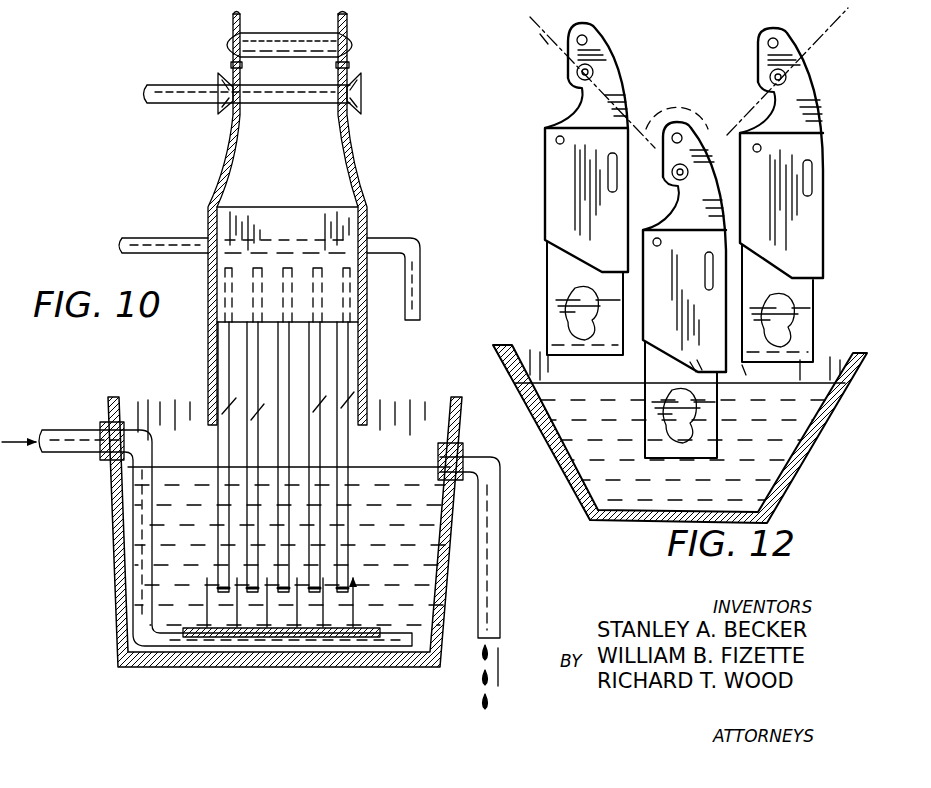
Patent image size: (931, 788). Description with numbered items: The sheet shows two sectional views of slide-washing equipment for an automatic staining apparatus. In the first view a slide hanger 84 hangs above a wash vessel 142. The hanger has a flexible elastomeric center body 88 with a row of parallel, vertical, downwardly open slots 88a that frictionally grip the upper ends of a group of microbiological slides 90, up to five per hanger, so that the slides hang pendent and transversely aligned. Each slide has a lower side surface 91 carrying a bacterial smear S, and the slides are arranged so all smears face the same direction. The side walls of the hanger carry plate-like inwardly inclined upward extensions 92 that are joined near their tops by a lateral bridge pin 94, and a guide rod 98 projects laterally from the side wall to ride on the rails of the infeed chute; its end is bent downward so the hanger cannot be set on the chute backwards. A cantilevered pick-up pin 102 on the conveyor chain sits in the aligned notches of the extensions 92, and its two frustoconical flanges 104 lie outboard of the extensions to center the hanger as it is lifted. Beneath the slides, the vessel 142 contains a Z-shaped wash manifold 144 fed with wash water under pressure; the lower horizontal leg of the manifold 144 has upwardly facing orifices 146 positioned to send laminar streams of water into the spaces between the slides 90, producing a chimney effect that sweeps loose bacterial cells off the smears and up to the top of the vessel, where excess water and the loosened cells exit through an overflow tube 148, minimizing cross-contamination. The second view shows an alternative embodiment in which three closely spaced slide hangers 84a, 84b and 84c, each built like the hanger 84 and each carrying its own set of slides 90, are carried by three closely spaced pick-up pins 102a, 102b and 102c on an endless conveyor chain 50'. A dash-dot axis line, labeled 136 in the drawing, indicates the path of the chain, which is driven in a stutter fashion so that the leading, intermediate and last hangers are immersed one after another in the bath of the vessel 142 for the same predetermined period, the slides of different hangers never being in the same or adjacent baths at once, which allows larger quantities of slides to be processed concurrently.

In FIG. 10, the slide hanger 84 is at (206, 207).
In FIG. 12, the slide hanger 84a is at (856, 134).
In FIG. 12, the slide hanger 84b is at (655, 267).
In FIG. 12, the slide hanger 84c is at (570, 170).
In FIG. 10, the center body 88 is at (343, 215).
In FIG. 10, the slots 88a is at (211, 305).
In FIG. 12, the microbiological slides 90 is at (553, 279).
In FIG. 10, the lower side surface 91 is at (220, 452).
In FIG. 10, the upward extensions 92 is at (356, 201).
In FIG. 10, the lateral bridge pin 94 is at (305, 36).
In FIG. 10, the rear guide rod 98 is at (421, 296).
In FIG. 10, the pick-up pin 102 is at (291, 96).
In FIG. 12, the pick-up pin 102a is at (770, 70).
In FIG. 12, the pick-up pin 102b is at (703, 148).
In FIG. 12, the pick-up pin 102c is at (577, 79).
In FIG. 10, the flanges 104 is at (361, 106).
In FIG. 12, the axis line 136 is at (655, 74).
In FIG. 12, the endless conveyor chain 50' is at (532, 50).
In FIG. 10, the vessel 142 is at (460, 400).
In FIG. 12, the vessel 142 is at (812, 435).
In FIG. 10, the wash manifold 144 is at (65, 452).
In FIG. 10, the orifices 146 is at (270, 634).
In FIG. 10, the overflow tube 148 is at (494, 605).
In FIG. 10, the bacterial smear S is at (344, 537).